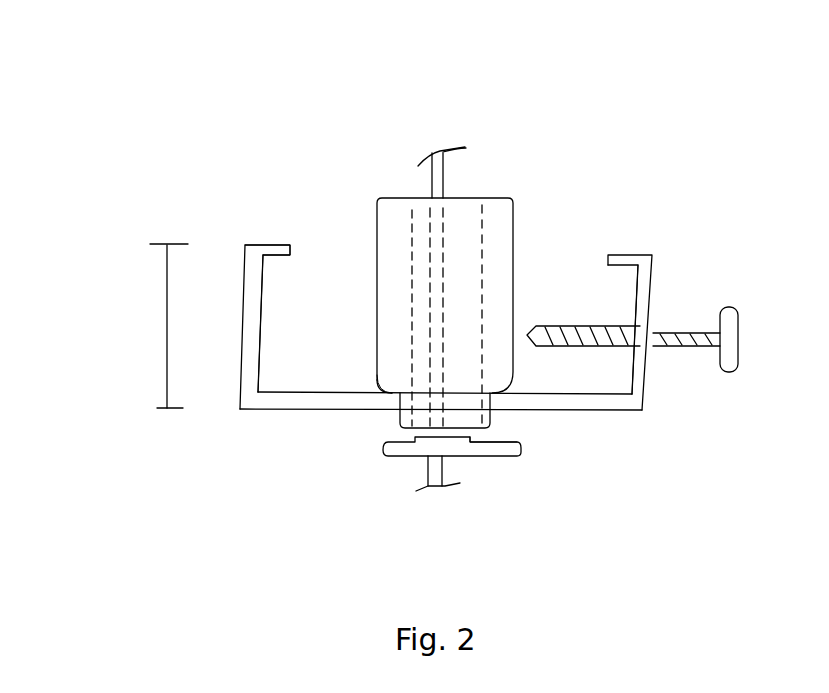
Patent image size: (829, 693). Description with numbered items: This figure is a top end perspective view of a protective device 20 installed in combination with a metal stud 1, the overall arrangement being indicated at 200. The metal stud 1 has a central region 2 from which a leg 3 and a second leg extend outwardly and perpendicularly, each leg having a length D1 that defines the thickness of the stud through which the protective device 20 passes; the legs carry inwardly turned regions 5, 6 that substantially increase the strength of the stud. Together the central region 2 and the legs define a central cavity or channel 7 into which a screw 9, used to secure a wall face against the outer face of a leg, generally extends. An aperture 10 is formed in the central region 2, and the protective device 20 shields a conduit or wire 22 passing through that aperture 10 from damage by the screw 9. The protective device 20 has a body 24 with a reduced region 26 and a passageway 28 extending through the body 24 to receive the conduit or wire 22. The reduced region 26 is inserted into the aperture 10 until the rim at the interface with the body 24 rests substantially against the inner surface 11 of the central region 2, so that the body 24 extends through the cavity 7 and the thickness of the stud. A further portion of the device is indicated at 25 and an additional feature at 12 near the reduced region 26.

The mounting system 200 is at (145, 90).
The protective device 20 is at (566, 224).
The distance of the legs D1 is at (166, 300).
The central region 2 is at (590, 413).
The leg 3 is at (243, 333).
The region 5 is at (277, 244).
The inner surface 11 is at (279, 388).
The region 6 is at (618, 254).
The metal stud 1 is at (645, 358).
The body 24 is at (364, 290).
The passageway 28 is at (412, 255).
The lower flange 25 is at (377, 387).
The reduced region 26 is at (390, 420).
The conduit or wire 22 is at (420, 468).
The plate step 12 is at (489, 462).
The aperture 10 is at (523, 420).
The central cavity or channel 7 is at (600, 308).
The screw 9 is at (697, 330).